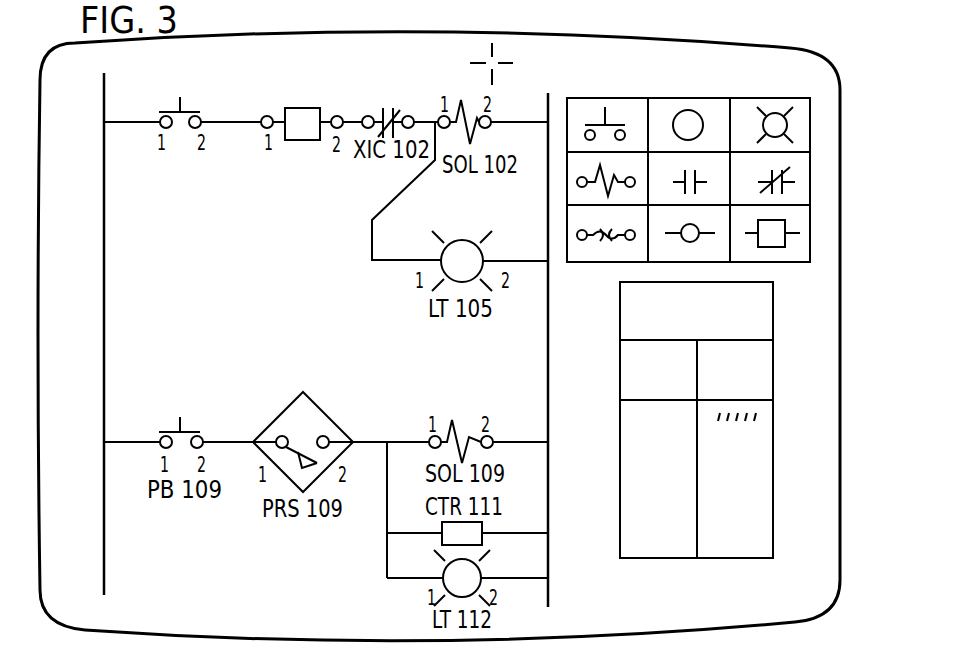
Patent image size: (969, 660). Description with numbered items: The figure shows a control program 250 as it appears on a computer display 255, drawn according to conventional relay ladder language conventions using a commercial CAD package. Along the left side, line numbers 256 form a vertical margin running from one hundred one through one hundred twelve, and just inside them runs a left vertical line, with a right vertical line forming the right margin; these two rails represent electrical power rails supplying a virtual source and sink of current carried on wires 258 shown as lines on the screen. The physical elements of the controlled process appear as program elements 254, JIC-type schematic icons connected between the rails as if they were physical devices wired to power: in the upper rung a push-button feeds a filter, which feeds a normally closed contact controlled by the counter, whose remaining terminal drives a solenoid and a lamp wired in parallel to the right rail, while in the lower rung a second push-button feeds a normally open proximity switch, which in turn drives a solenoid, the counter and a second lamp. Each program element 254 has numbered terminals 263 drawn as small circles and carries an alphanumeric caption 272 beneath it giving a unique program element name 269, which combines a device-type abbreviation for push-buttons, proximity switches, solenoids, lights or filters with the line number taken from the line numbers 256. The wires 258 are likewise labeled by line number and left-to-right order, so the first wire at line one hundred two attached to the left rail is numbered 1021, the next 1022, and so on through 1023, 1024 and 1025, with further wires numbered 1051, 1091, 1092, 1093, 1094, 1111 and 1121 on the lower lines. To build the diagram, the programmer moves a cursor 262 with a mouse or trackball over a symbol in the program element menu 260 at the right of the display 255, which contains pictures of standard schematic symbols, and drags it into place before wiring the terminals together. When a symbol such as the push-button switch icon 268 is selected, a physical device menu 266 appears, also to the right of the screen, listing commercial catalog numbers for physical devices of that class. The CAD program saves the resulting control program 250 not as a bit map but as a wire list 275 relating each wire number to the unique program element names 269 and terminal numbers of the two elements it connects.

The control program 250 is at (772, 45).
The computer display 255 is at (665, 40).
The line numbers 256 is at (55, 72).
The program elements 254 is at (298, 93).
The wires 258 is at (263, 113).
The cursor 262 is at (480, 62).
The terminals 263 is at (160, 127).
The program element menu 260 is at (686, 98).
The push-button switch icon 268 is at (620, 117).
The physical device menu 266 is at (775, 325).
The wire list 275 is at (666, 563).
The alphanumeric caption 272 is at (266, 188).
The unique program element name 269 is at (244, 167).
The wire number 1021 is at (141, 113).
The wire number 1022 is at (225, 113).
The wire number 1023 is at (358, 118).
The wire number 1024 is at (428, 119).
The wire number 1025 is at (493, 122).
The wire number 1051 is at (490, 261).
The wire number 1091 is at (138, 432).
The wire number 1092 is at (233, 432).
The wire number 1093 is at (385, 498).
The wire number 1094 is at (494, 441).
The wire number 1111 is at (467, 526).
The wire number 1121 is at (467, 578).